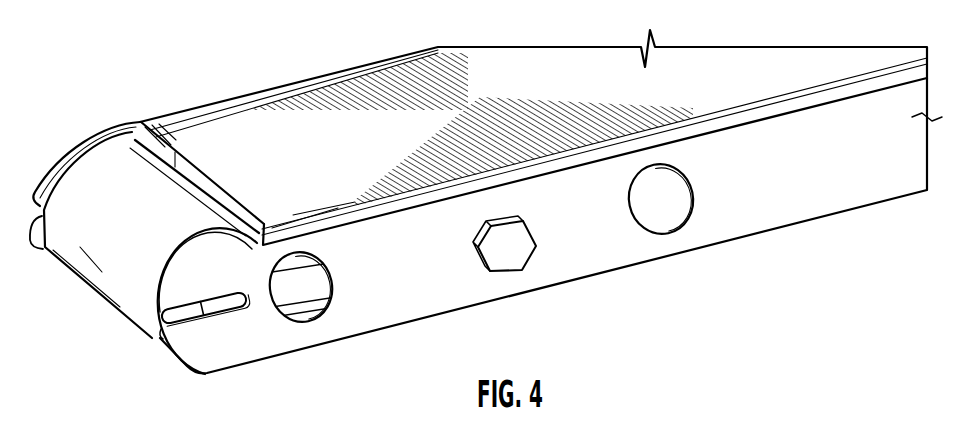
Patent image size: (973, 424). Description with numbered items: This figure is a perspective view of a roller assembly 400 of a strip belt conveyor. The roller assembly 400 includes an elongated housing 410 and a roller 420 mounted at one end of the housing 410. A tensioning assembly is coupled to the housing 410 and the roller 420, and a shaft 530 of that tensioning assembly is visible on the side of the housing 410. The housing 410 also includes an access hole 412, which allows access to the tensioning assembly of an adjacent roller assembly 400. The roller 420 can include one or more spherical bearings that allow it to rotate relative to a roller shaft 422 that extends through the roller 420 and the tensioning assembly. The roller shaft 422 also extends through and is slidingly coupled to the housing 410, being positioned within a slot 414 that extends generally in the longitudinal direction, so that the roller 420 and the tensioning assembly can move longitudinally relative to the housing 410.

The roller assembly 400 is at (176, 76).
The housing 410 is at (774, 64).
The access hole 412 is at (668, 199).
The slot 414 is at (159, 318).
The roller 420 is at (85, 274).
The roller shaft 422 is at (222, 308).
The shaft 530 is at (513, 248).